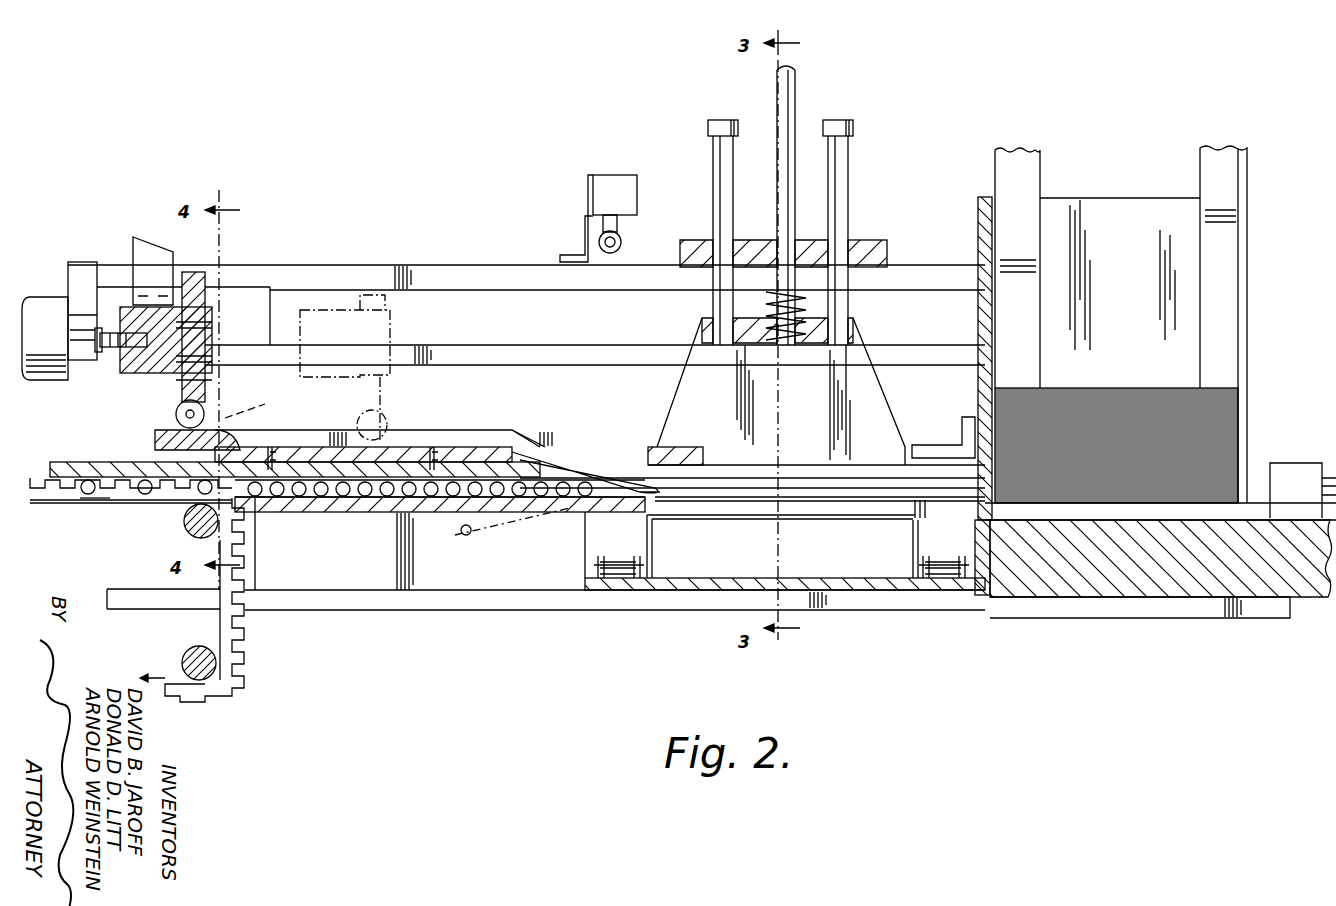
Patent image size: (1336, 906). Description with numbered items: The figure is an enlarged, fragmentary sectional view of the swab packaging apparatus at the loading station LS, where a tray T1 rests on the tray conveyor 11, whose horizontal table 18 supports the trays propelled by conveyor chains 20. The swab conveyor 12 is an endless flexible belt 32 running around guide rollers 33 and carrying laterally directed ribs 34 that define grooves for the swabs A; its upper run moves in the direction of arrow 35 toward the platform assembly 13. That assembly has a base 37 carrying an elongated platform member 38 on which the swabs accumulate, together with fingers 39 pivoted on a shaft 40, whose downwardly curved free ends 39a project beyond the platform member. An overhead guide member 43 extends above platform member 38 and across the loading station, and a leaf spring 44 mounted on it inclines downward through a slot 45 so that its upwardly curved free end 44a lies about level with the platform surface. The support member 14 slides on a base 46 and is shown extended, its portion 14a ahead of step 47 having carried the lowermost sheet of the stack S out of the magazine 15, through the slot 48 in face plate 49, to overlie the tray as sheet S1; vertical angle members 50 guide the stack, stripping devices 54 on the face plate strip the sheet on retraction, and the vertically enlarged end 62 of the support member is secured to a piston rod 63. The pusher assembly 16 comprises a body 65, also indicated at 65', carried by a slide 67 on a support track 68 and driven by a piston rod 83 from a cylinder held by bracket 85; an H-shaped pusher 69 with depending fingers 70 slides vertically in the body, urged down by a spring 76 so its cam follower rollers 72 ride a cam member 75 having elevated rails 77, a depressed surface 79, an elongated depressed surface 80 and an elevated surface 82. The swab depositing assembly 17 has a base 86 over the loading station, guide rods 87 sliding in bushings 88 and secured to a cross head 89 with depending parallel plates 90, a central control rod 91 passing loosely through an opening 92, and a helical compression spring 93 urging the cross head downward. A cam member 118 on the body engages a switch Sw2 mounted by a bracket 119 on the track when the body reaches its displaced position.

The conveyor 11 is at (573, 583).
The conveyor 12 is at (56, 510).
The platform assembly 13 is at (373, 528).
The support member 14 is at (850, 518).
The portion 14a is at (793, 518).
The magazine 15 is at (1254, 212).
The pusher assembly 16 is at (237, 302).
The swab depositing assembly 17 is at (879, 118).
The table 18 is at (707, 589).
The conveyor chains 20 is at (620, 578).
The endless flexible belt 32 is at (135, 502).
The guide rollers 33 is at (187, 530).
The ribs 34 is at (37, 382).
The arrow 35 is at (110, 516).
The base 37 is at (440, 610).
The platform member 38 is at (425, 520).
The fingers 39 is at (512, 539).
The free ends 39a is at (672, 494).
The shaft 40 is at (468, 536).
The overhead guide member 43 is at (485, 455).
The leaf spring 44 is at (560, 450).
The free end 44a is at (662, 514).
The slot 45 is at (625, 470).
The base 46 is at (1320, 598).
The step 47 is at (900, 492).
The slot 48 is at (974, 520).
The face plate 49 is at (978, 324).
The angle members 50 is at (1200, 178).
The stripping devices 54 is at (957, 419).
The vertically enlarged end 62 is at (1300, 458).
The piston rod 63 is at (1330, 460).
The body 65 is at (166, 355).
The block phantom position 65' is at (330, 407).
The slide 67 is at (275, 300).
The support track 68 is at (472, 274).
The pusher 69 is at (178, 404).
The depending fingers 70 is at (259, 401).
The cam follower rollers 72 is at (202, 408).
The cam member 75 is at (440, 420).
The spring 76 is at (210, 380).
The elevated rails 77 is at (522, 430).
The depressed surface 79 is at (680, 448).
The elongated depressed surface 80 is at (420, 408).
The elevated surface 82 is at (180, 438).
The piston rod 83 is at (108, 355).
The bracket 85 is at (72, 274).
The base 86 is at (876, 246).
The guide rods 87 is at (734, 186).
The bushings 88 is at (732, 240).
The cross head 89 is at (756, 345).
The parallel plates 90 is at (684, 384).
The central control rod 91 is at (796, 98).
The opening 92 is at (802, 240).
The helical compression spring 93 is at (806, 298).
The cam member 118 is at (149, 236).
The bracket 119 is at (588, 206).
The swabs A is at (123, 443).
The separating sheets S is at (1232, 385).
The separating sheet S1 is at (760, 510).
The tray T1 is at (706, 578).
The loading station LS is at (882, 575).
The switch Sw2 is at (622, 190).